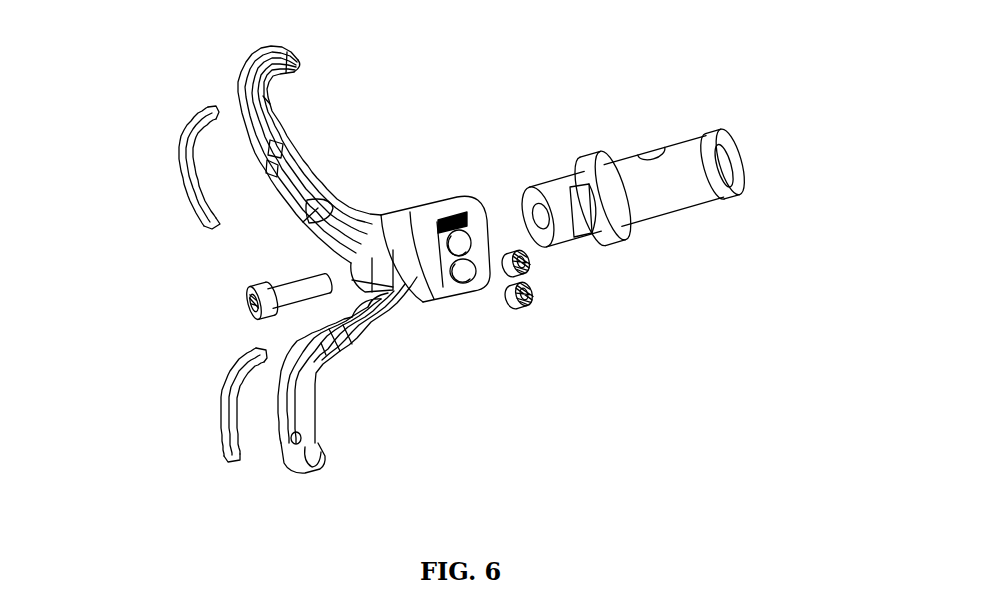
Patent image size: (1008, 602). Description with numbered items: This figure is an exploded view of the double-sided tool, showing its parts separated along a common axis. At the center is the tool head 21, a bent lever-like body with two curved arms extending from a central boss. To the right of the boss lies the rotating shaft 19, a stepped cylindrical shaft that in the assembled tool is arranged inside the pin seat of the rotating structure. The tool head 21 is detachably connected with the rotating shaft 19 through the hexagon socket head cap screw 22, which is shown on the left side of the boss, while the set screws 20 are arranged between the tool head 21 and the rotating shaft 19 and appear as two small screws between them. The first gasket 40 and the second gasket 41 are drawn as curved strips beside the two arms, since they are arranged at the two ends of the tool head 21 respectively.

The rotating shaft 19 is at (673, 215).
The set screws 20 is at (530, 300).
The tool head 21 is at (410, 278).
The hexagon socket head cap screw 22 is at (248, 298).
The first gasket 40 is at (185, 152).
The second gasket 41 is at (221, 403).